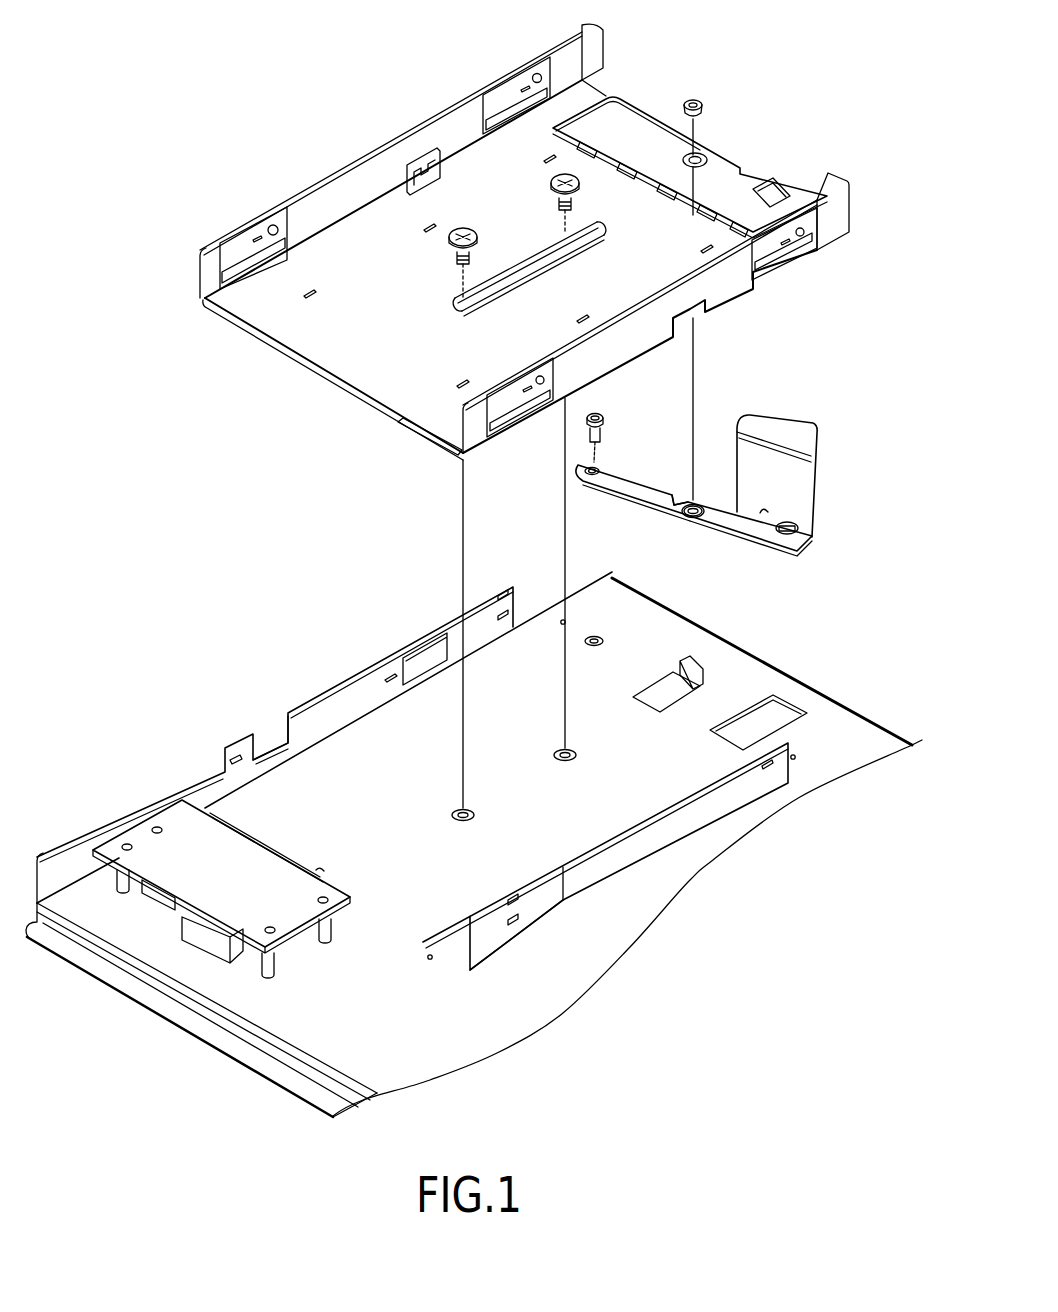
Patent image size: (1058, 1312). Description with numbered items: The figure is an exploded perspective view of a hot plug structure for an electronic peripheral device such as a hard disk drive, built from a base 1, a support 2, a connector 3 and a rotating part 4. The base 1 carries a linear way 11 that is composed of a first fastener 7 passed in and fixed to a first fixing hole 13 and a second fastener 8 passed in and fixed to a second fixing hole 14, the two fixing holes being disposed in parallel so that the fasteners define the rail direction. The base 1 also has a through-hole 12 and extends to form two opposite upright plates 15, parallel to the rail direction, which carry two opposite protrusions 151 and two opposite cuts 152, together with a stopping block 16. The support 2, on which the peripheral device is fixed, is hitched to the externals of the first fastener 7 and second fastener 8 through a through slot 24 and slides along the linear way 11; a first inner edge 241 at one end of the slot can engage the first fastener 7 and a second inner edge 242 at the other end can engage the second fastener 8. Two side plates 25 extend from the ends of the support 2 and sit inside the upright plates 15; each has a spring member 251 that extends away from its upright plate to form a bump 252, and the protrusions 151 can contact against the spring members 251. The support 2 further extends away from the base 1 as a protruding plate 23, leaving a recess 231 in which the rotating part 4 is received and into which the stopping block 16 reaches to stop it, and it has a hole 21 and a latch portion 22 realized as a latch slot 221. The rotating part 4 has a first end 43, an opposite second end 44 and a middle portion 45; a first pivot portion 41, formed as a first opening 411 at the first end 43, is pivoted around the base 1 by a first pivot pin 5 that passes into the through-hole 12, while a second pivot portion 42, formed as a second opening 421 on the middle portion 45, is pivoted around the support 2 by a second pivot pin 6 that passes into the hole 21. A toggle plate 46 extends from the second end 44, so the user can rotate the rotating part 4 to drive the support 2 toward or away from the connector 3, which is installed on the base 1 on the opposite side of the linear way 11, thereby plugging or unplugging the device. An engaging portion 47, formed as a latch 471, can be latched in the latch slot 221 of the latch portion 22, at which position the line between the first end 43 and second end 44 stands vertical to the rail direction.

The base 1 is at (842, 723).
The linear way 11 is at (512, 788).
The through-hole 12 is at (598, 636).
The first fixing hole 13 is at (556, 749).
The second fixing hole 14 is at (452, 812).
The upright plates 15 is at (340, 700).
The protrusions 151 is at (233, 753).
The cuts 152 is at (288, 727).
The stopping block 16 is at (680, 665).
The support 2 is at (323, 352).
The hole 21 is at (700, 155).
The latch portion 22 is at (765, 192).
The latch slot 221 is at (777, 193).
The protruding plate 23 is at (653, 123).
The recess 231 is at (637, 110).
The through slot 24 is at (553, 265).
The first inner edge 241 is at (616, 212).
The second inner edge 242 is at (455, 298).
The side plates 25 is at (345, 175).
The spring members 251 is at (243, 243).
The bump 252 is at (275, 226).
The connector 3 is at (240, 830).
The rotating part 4 is at (647, 468).
The first pivot portion 41 is at (594, 465).
The first opening 411 is at (585, 467).
The second pivot portion 42 is at (697, 506).
The second opening 421 is at (680, 514).
The first end 43 is at (578, 472).
The second end 44 is at (806, 550).
The middle portion 45 is at (668, 504).
The toggle plate 46 is at (793, 473).
The engaging portion 47 is at (795, 522).
The latch 471 is at (801, 538).
The first pivot pin 5 is at (584, 428).
The second pivot pin 6 is at (697, 100).
The first fastener 7 is at (550, 178).
The second fastener 8 is at (447, 237).